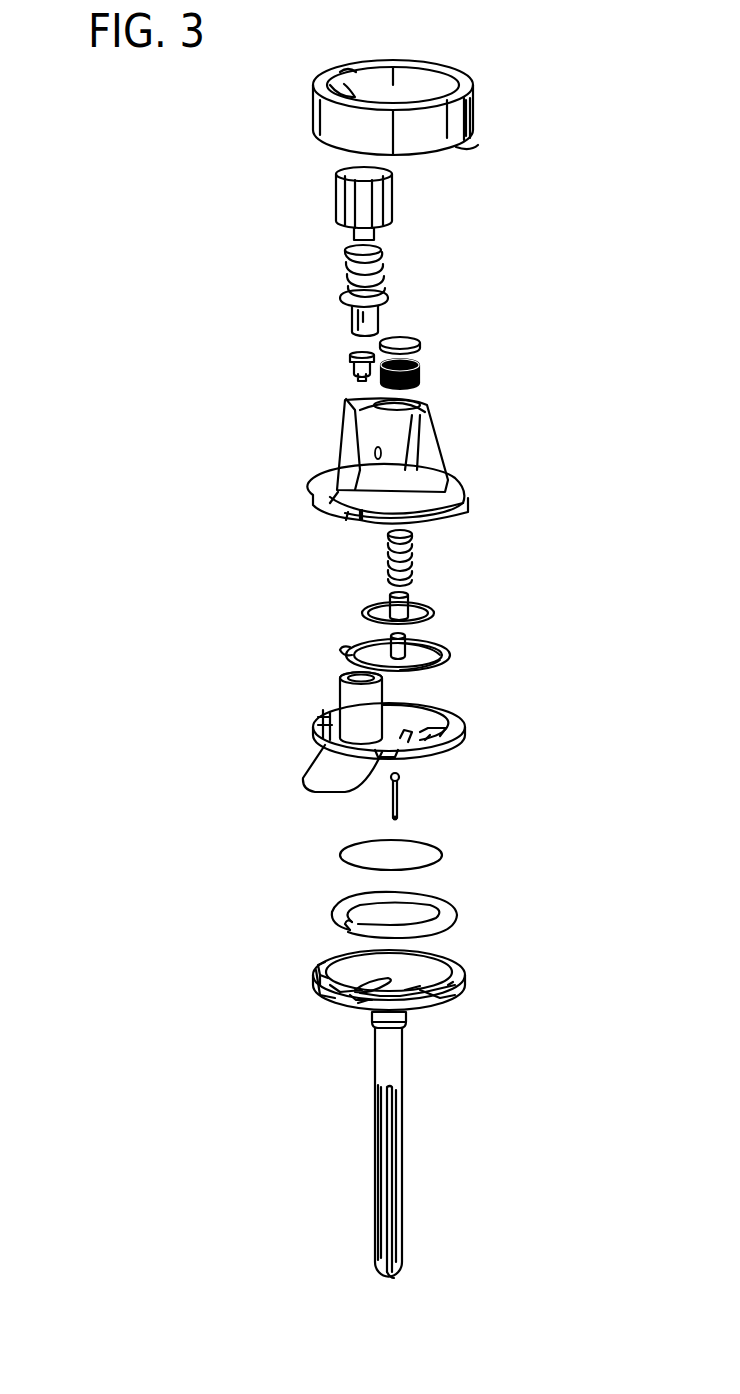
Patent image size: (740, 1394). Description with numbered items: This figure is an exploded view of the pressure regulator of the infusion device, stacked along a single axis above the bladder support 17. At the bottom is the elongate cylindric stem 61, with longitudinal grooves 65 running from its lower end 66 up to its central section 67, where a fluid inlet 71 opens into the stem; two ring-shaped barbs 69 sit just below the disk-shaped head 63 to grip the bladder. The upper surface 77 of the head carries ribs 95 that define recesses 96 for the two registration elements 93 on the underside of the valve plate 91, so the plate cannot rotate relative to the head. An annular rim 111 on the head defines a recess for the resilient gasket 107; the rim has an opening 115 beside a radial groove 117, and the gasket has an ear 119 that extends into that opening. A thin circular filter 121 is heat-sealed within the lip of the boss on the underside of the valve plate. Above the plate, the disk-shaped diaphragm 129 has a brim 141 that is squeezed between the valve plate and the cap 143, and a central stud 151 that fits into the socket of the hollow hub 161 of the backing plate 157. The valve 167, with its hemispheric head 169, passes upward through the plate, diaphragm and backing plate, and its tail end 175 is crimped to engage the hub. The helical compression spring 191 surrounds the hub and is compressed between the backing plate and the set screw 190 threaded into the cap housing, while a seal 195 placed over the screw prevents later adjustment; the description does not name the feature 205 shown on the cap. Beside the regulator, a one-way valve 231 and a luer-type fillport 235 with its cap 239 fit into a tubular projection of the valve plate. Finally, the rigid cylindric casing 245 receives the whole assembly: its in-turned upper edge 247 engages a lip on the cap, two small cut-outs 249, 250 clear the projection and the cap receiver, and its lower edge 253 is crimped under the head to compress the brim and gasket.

The bladder support 17 is at (355, 1190).
The stem 61 is at (404, 1164).
The head 63 is at (456, 988).
The grooves 65 is at (394, 1207).
The lower end 66 is at (392, 1276).
The central section 67 is at (375, 1120).
The barbs 69 is at (406, 1022).
The fluid inlet 71 is at (397, 1096).
The upper surface 77 is at (433, 976).
The valve plate 91 is at (466, 740).
The registration elements 93 is at (320, 788).
The ribs 95 is at (318, 984).
The recesses 96 is at (445, 1008).
The gasket 107 is at (450, 905).
The annular rim 111 is at (345, 962).
The opening 115 is at (358, 998).
The groove 117 is at (362, 1002).
The ear 119 is at (345, 926).
The filter 121 is at (443, 855).
The diaphragm 129 is at (432, 655).
The brim 141 is at (447, 660).
The cap 143 is at (442, 428).
The stud 151 is at (432, 640).
The backing plate 157 is at (428, 606).
The hub 161 is at (391, 603).
The valve 167 is at (399, 800).
The hemispheric head 169 is at (398, 817).
The tail end 175 is at (400, 777).
The set screw 190 is at (420, 372).
The spring 191 is at (413, 555).
The seal 195 is at (412, 338).
The housing aperture 205 is at (373, 456).
The one-way valve 231 is at (350, 366).
The fillport 235 is at (386, 290).
The cap 239 is at (384, 201).
The casing 245 is at (472, 112).
The upper edge 247 is at (440, 68).
The cut-out 249 is at (342, 87).
The cut-out 250 is at (352, 70).
The lower edge 253 is at (458, 150).